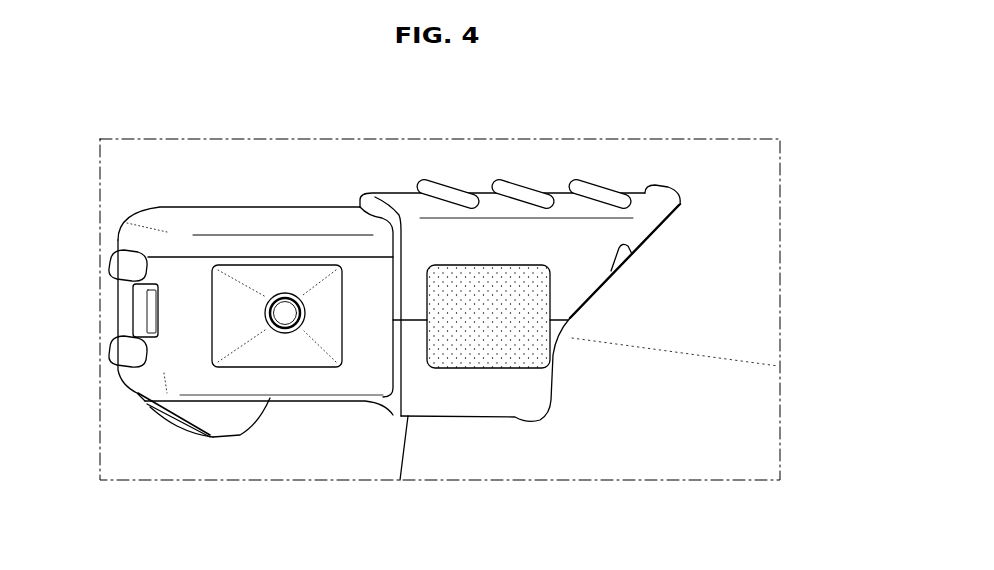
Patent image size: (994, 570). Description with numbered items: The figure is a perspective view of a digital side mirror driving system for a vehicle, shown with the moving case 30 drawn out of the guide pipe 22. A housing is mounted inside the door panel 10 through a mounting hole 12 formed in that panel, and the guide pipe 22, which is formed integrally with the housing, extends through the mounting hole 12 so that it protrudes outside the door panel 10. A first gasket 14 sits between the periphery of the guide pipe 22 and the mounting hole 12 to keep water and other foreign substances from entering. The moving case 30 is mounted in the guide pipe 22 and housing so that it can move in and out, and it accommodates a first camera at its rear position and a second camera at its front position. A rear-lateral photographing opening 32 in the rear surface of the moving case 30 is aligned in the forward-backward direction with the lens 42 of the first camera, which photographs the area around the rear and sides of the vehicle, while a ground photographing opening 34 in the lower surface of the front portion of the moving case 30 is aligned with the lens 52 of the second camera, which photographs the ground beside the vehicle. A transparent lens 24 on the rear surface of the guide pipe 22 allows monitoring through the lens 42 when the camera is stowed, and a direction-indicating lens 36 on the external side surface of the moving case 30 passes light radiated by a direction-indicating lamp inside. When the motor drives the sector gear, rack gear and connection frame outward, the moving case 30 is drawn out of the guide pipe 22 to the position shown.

The door panel 10 is at (724, 207).
The mounting hole 12 is at (628, 262).
The first gasket 14 is at (585, 183).
The guide pipe 22 is at (445, 400).
The transparent lens 24 is at (493, 348).
The moving case 30 is at (227, 185).
The rear-lateral photographing opening 32 is at (243, 358).
The ground photographing opening 34 is at (169, 416).
The direction-indicating lens 36 is at (142, 312).
The lens of the first camera 42 is at (290, 315).
The lens of the second camera 52 is at (168, 418).